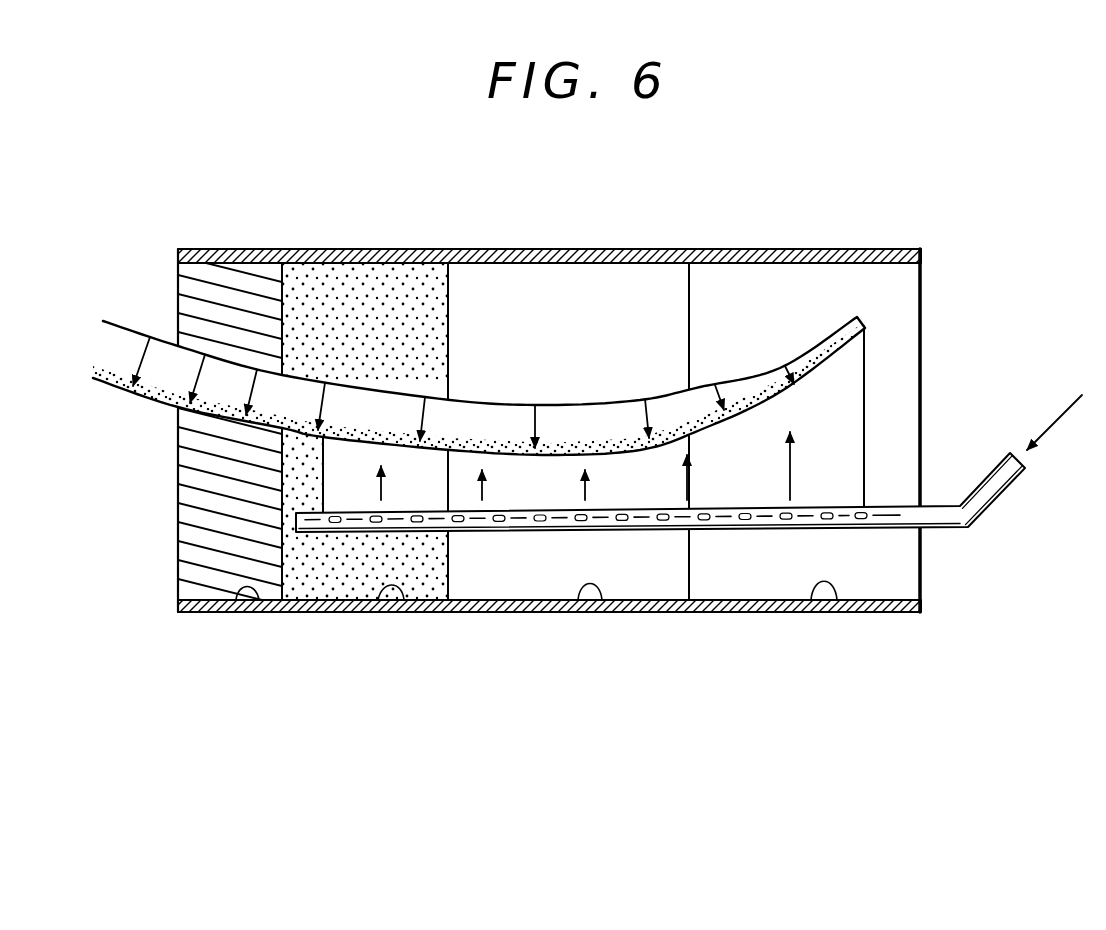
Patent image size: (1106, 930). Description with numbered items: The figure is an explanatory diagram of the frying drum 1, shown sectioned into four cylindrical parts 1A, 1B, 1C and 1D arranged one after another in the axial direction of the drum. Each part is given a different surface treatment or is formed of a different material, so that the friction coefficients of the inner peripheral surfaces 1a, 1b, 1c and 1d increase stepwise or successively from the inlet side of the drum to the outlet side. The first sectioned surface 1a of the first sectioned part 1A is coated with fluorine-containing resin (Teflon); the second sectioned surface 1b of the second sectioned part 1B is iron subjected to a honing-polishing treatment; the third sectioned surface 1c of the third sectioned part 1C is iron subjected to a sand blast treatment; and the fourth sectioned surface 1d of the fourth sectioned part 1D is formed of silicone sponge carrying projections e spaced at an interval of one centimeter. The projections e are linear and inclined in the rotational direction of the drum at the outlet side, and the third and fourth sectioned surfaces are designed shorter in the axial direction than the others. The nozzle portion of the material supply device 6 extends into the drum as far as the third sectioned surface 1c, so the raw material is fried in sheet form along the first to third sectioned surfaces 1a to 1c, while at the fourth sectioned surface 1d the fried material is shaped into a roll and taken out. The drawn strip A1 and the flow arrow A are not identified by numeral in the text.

The frying drum 1 is at (391, 249).
The first sectioned part 1A is at (825, 249).
The second sectioned part 1B is at (610, 249).
The third sectioned part 1C is at (430, 249).
The fourth sectioned part 1D is at (228, 249).
The first sectioned surface 1a is at (822, 610).
The second sectioned surface 1b is at (601, 610).
The third sectioned surface 1c is at (401, 612).
The fourth sectioned surface 1d is at (261, 612).
The curved strip (workpiece) passing through furnace A1 is at (128, 330).
The gas supply flow direction A is at (1063, 423).
The material supply device 6 is at (966, 522).
The projections e is at (198, 510).